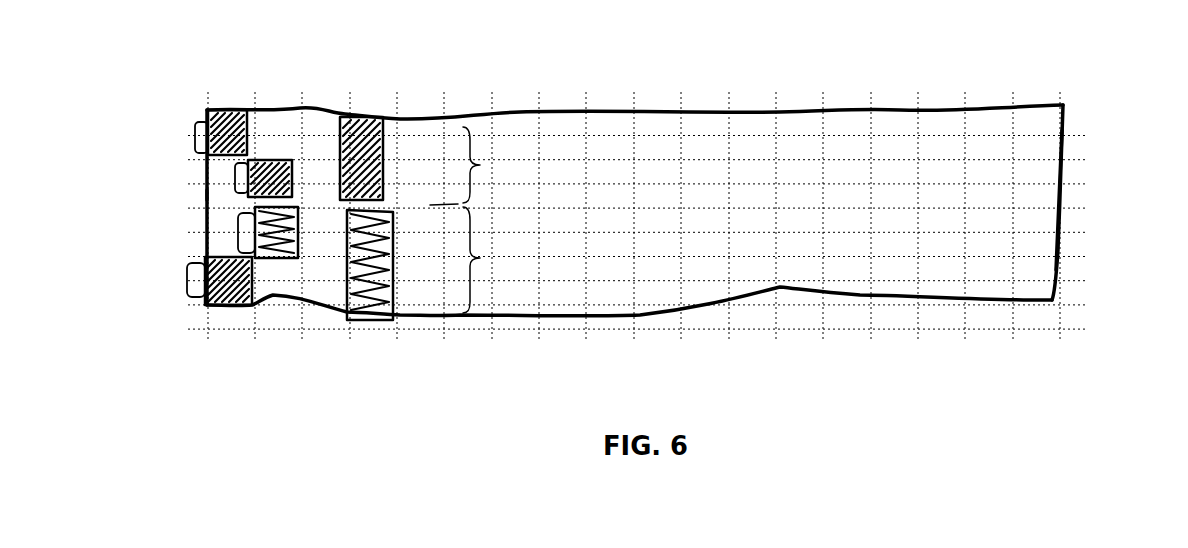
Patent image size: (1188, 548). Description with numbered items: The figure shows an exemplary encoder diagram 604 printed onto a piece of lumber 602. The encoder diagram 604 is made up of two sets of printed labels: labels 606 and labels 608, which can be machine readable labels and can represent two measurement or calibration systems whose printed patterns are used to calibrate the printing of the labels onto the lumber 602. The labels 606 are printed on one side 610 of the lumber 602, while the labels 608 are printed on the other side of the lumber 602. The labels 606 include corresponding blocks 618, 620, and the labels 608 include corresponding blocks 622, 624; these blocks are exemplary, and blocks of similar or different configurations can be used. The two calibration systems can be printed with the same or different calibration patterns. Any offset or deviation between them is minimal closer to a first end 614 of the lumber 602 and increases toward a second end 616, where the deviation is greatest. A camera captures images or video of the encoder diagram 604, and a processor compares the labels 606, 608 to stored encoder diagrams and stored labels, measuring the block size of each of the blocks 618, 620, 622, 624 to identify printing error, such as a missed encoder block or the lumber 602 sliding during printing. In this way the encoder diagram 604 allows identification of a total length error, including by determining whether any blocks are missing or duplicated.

The lumber 602 is at (642, 88).
The encoder diagram 604 is at (281, 91).
The labels 606 is at (217, 112).
The labels 608 is at (215, 308).
The side of the lumber 610 is at (480, 165).
The first end of the lumber 614 is at (208, 195).
The second end of the lumber 616 is at (1052, 202).
The block 618 is at (194, 133).
The block 620 is at (234, 177).
The block 622 is at (240, 230).
The block 624 is at (187, 279).